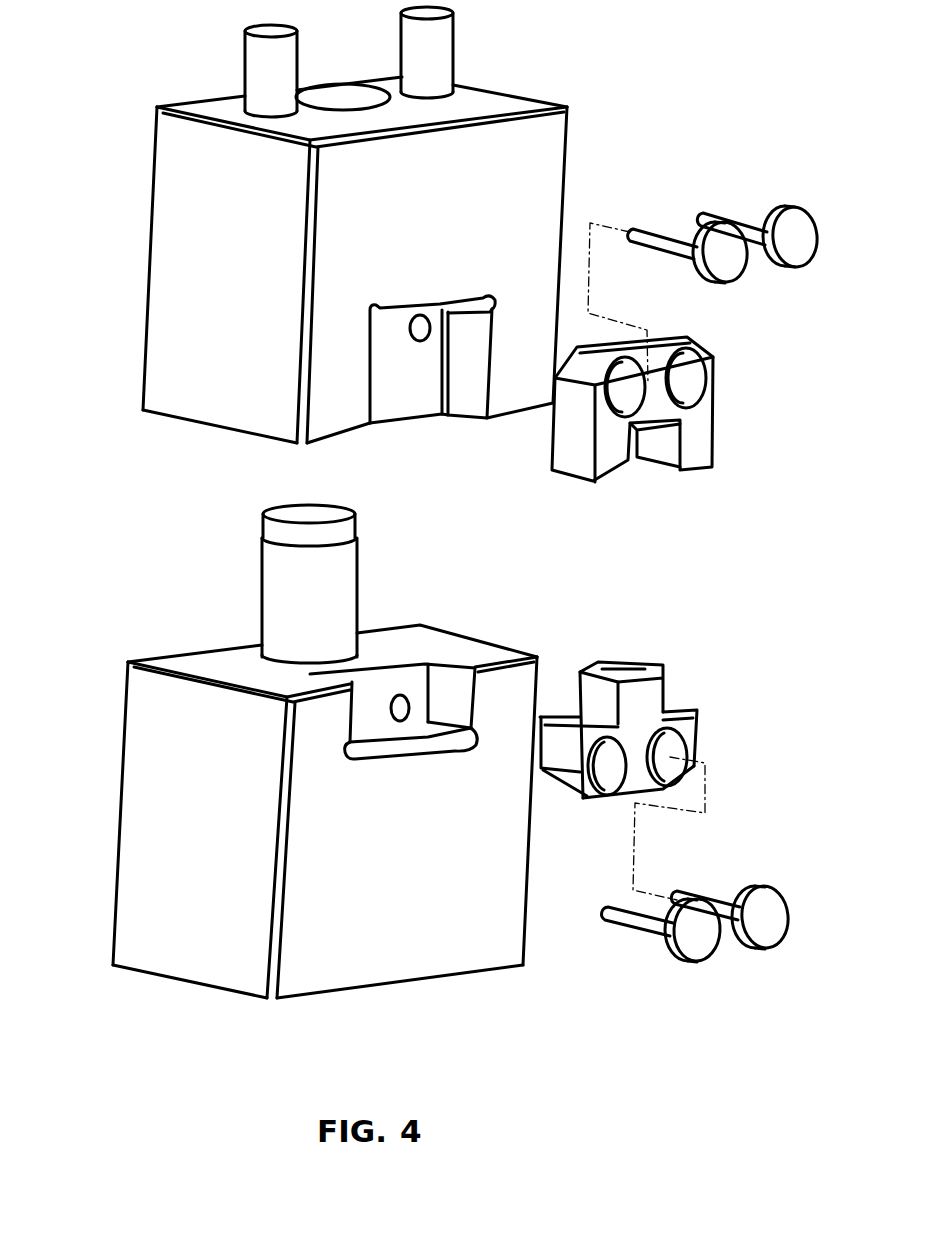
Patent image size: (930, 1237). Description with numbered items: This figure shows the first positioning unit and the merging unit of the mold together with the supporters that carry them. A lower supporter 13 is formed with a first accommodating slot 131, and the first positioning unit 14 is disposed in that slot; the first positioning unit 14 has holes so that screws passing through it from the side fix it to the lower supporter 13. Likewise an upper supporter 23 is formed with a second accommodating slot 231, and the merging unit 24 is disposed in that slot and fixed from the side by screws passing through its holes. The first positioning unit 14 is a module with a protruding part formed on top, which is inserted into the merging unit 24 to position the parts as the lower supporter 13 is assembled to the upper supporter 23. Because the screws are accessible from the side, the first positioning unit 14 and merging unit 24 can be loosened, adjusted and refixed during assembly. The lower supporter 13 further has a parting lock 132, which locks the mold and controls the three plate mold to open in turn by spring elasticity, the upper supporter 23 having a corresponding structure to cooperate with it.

The lower supporter 13 is at (157, 777).
The first accommodating slot 131 is at (390, 727).
The parting lock 132 is at (278, 585).
The first positioning unit 14 is at (645, 716).
The upper supporter 23 is at (200, 172).
The second accommodating slot 231 is at (418, 393).
The merging unit 24 is at (693, 423).